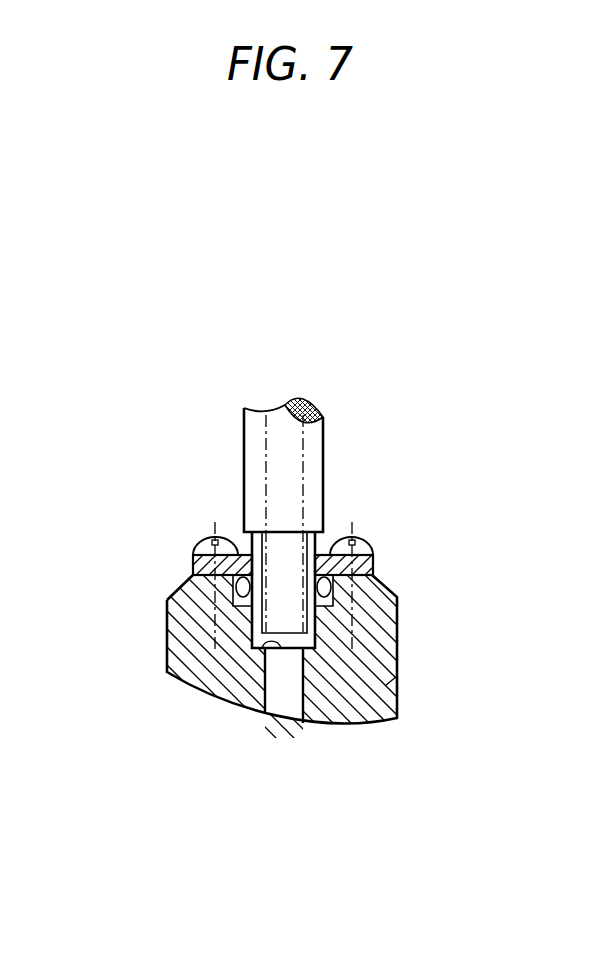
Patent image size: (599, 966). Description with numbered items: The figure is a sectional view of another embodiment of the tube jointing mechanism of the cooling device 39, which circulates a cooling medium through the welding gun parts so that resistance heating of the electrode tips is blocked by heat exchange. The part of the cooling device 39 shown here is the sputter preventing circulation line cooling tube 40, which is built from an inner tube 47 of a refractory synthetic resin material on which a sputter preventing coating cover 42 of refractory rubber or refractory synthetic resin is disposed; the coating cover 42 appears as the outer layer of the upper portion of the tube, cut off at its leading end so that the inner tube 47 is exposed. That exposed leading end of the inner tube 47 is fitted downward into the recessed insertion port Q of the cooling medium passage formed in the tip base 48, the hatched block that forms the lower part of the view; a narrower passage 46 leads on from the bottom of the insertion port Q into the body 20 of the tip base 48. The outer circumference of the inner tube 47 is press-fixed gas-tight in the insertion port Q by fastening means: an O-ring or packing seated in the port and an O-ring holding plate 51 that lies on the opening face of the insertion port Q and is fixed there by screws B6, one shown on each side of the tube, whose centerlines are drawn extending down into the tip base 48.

The housing 20 is at (397, 624).
The tip base 48 is at (383, 686).
The O-ring holding plate 51 is at (373, 568).
The bolt B6 is at (370, 542).
The cooling device 39 is at (82, 452).
The circulation line cooling tube 40 is at (255, 457).
The inner tube 47 is at (285, 598).
The sputter preventing coating cover 42 is at (316, 405).
The pin 46 is at (292, 700).
The insertion port Q is at (281, 648).